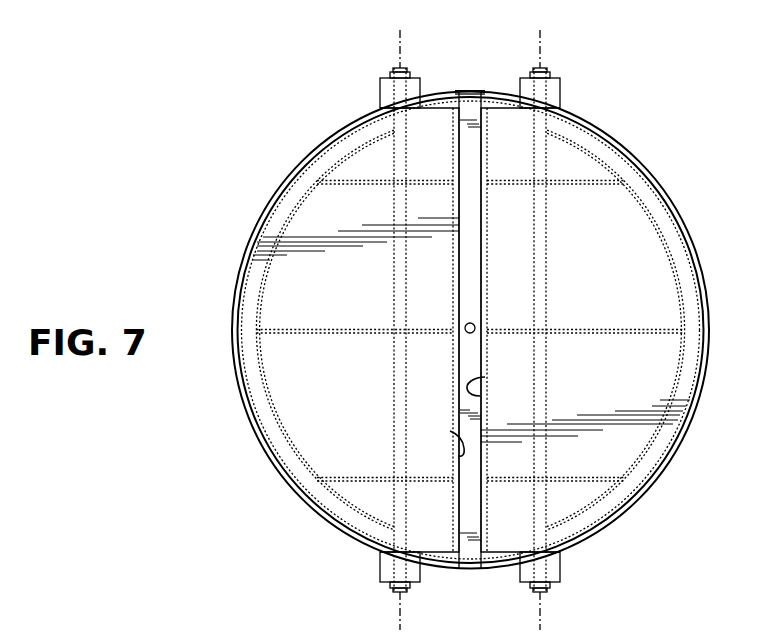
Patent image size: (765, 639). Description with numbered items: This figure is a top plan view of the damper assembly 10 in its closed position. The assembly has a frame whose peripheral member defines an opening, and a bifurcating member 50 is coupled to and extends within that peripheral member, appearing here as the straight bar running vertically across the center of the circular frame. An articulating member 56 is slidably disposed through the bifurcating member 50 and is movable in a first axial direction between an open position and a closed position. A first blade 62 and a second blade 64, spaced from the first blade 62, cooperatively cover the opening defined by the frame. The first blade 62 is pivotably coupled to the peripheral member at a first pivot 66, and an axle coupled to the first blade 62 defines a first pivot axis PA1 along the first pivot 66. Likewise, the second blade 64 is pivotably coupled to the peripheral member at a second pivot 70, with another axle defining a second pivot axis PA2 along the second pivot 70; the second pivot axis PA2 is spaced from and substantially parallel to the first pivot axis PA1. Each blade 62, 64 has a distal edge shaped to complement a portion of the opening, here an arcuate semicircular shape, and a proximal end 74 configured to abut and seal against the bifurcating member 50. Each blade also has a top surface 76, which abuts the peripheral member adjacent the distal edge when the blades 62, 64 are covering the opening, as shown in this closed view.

The damper assembly 10 is at (196, 189).
The bifurcating member 50 is at (470, 557).
The articulating member 56 is at (474, 324).
The first blade 62 is at (312, 272).
The second blade 64 is at (628, 270).
The first pivot 66 is at (386, 95).
The second pivot 70 is at (552, 94).
The proximal end 74 is at (485, 377).
The top surface 76 is at (362, 414).
The first pivot axis PA1 is at (400, 53).
The second pivot axis PA2 is at (540, 53).